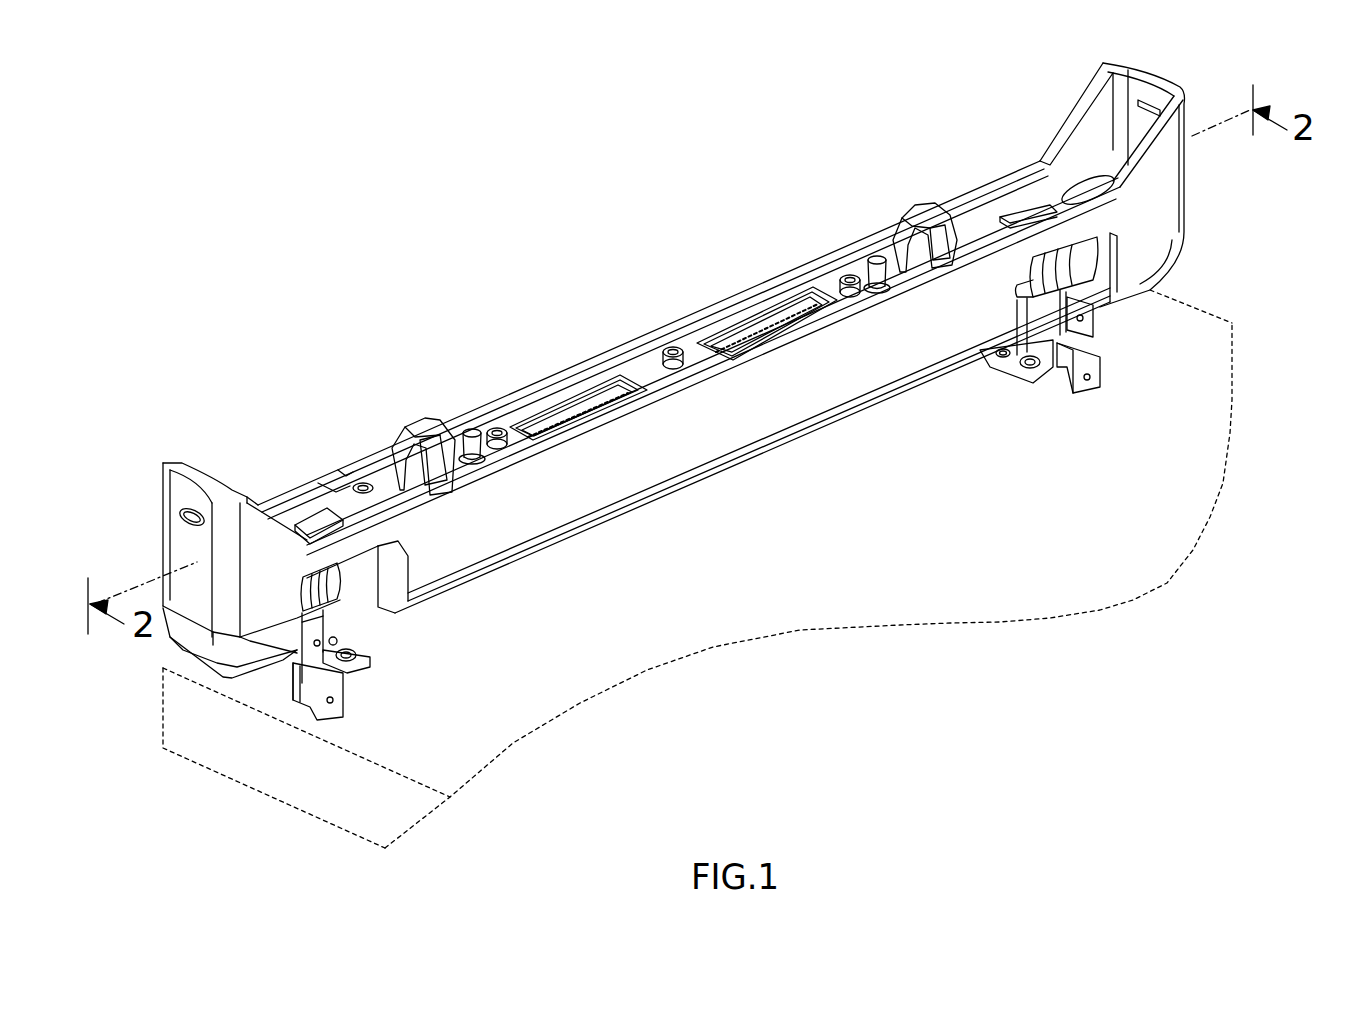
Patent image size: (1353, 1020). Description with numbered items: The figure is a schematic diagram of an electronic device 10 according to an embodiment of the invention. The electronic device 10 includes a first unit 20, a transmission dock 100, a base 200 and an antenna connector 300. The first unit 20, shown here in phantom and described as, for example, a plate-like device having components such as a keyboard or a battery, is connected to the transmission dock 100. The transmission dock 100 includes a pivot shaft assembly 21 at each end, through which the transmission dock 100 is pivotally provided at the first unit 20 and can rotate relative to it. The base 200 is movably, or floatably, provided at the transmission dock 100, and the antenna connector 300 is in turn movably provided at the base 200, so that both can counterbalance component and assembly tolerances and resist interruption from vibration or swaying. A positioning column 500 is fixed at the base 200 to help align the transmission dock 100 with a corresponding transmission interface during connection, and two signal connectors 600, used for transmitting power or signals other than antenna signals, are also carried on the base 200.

The electronic device 10 is at (167, 129).
The transmission dock 100 is at (372, 466).
The base 200 is at (630, 373).
The antenna connector 300 is at (500, 428).
The positioning column 500 is at (470, 429).
The signal connector 600 is at (556, 404).
The first unit 20 is at (247, 740).
The pivot shaft assembly 21 is at (1087, 318).